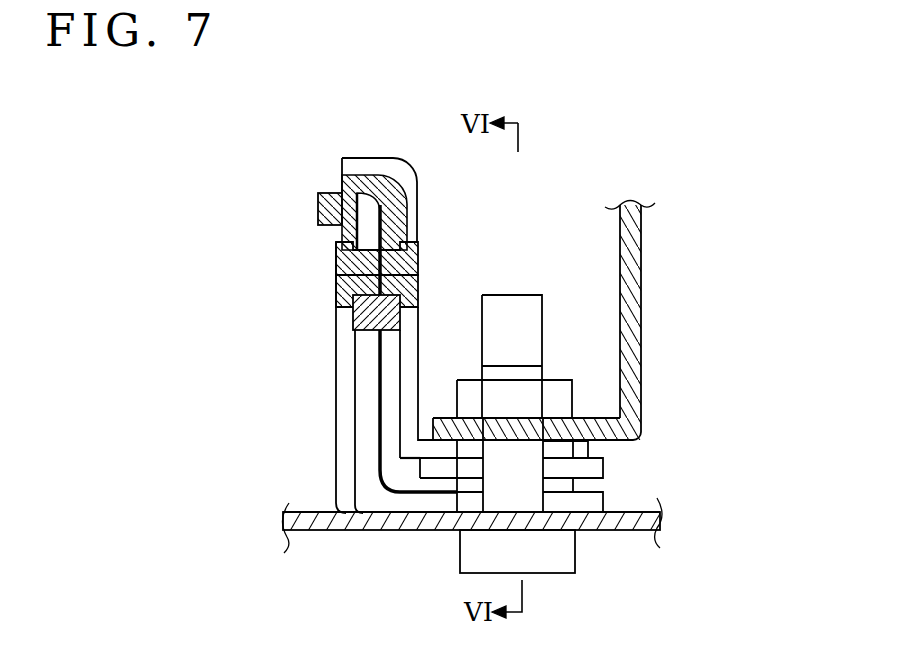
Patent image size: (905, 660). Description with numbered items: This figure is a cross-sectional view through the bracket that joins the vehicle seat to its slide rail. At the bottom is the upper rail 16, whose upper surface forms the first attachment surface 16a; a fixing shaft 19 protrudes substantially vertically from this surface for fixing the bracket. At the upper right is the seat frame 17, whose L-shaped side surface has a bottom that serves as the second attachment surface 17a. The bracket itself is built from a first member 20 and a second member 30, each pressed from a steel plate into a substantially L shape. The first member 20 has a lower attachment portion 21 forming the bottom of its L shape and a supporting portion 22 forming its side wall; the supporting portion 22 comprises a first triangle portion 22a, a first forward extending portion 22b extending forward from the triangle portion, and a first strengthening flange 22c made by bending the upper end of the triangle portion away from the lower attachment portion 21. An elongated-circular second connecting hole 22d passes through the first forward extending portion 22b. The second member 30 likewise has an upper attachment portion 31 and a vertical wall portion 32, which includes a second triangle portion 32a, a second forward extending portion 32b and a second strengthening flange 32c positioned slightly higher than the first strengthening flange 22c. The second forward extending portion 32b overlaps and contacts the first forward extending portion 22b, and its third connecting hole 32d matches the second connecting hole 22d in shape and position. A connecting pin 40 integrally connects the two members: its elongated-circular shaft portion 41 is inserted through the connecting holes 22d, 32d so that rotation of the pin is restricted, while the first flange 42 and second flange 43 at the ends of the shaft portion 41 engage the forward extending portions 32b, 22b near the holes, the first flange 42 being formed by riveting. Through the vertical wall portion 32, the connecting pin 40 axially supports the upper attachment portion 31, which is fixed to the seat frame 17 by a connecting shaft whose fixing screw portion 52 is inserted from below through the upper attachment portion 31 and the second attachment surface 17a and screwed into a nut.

The upper rail 16 is at (637, 531).
The first attachment surface 16a is at (620, 512).
The seat frame 17 is at (642, 342).
The second attachment surface 17a is at (602, 443).
The fixing shaft 19 is at (536, 384).
The first member 20 is at (340, 514).
The lower attachment portion 21 is at (434, 504).
The supporting portion 22 is at (287, 301).
The first triangle portion 22a is at (367, 427).
The first forward extending portion 22b is at (352, 328).
The first strengthening flange 22c is at (318, 212).
The second connecting hole 22d is at (357, 250).
The second member 30 is at (365, 476).
The upper attachment portion 31 is at (420, 467).
The vertical wall portion 32 is at (320, 304).
The second triangle portion 32a is at (397, 458).
The second forward extending portion 32b is at (372, 390).
The second strengthening flange 32c is at (343, 170).
The third connecting hole 32d is at (414, 250).
The connecting pin 40 is at (299, 291).
The shaft portion 41 is at (335, 277).
The first flange 42 is at (333, 247).
The second flange 43 is at (337, 315).
The fixing screw portion 52 is at (520, 312).